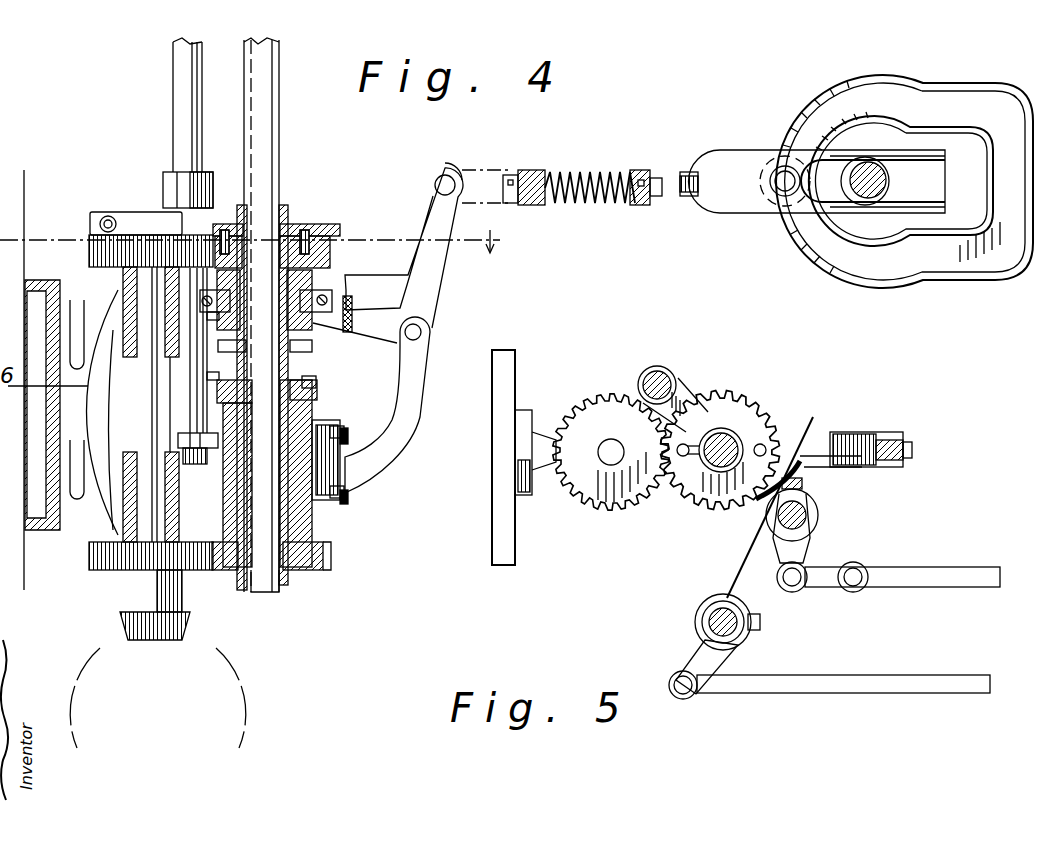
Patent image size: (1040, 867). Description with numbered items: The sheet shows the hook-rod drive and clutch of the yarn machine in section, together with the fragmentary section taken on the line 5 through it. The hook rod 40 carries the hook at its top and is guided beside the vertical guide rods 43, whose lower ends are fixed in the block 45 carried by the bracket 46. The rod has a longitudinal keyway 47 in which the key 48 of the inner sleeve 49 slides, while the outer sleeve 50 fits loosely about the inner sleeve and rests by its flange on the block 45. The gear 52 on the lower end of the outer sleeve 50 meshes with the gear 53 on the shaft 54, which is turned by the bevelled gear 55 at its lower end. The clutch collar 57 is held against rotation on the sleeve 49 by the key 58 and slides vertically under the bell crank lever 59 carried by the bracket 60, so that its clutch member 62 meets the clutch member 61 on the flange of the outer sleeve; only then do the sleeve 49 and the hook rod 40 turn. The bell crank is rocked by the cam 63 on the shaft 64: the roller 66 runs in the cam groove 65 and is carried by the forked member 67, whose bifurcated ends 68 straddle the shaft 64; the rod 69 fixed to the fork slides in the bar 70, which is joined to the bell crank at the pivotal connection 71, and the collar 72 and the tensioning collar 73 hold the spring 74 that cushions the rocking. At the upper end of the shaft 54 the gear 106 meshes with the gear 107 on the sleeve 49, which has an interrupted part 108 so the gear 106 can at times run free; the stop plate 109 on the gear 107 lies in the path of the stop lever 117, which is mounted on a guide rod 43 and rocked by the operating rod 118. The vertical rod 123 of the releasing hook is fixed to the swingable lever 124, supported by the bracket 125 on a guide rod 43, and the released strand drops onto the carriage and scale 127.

In FIG. 4, the keyway 47 is at (248, 48).
In FIG. 4, the guide rods 43 is at (181, 120).
In FIG. 5, the guide rods 43 is at (818, 517).
In FIG. 4, the hook rod 40 is at (262, 108).
In FIG. 4, the gear 106 is at (92, 252).
In FIG. 5, the gear 106 is at (598, 506).
In FIG. 4, the stop plate 109 is at (320, 230).
In FIG. 4, the gear 107 is at (330, 250).
In FIG. 5, the gear 107 is at (707, 490).
In FIG. 4, the clutch collar 57 is at (315, 277).
In FIG. 4, the key 58 is at (222, 318).
In FIG. 4, the clutch member 62 is at (315, 316).
In FIG. 4, the clutch member 61 is at (317, 382).
In FIG. 4, the bell crank lever 59 is at (435, 283).
In FIG. 5, the bell crank lever 59 is at (809, 477).
In FIG. 4, the bracket 60 is at (412, 432).
In FIG. 4, the block 45 is at (340, 506).
In FIG. 4, the gear 52 is at (335, 556).
In FIG. 4, the outer sleeve 50 is at (300, 572).
In FIG. 4, the inner sleeve 49 is at (292, 572).
In FIG. 4, the key 48 is at (262, 594).
In FIG. 4, the gear 53 is at (184, 578).
In FIG. 4, the bevelled gear 55 is at (120, 626).
In FIG. 4, the shaft 54 is at (120, 428).
In FIG. 4, the section line 5— 5 is at (255, 240).
In FIG. 4, the pivotal connection 71 is at (447, 180).
In FIG. 4, the bar 70 is at (488, 176).
In FIG. 5, the bar 70 is at (866, 468).
In FIG. 4, the collar 72 is at (515, 205).
In FIG. 4, the spring 74 is at (596, 205).
In FIG. 4, the collar 73 is at (645, 206).
In FIG. 4, the rod 69 is at (666, 170).
In FIG. 4, the forked member 67 is at (745, 212).
In FIG. 4, the roller 66 is at (778, 168).
In FIG. 4, the bifurcated ends 68 is at (928, 192).
In FIG. 4, the shaft 64 is at (888, 180).
In FIG. 4, the cam 63 is at (898, 283).
In FIG. 4, the cam groove 65 is at (992, 278).
In FIG. 5, the bracket 46 is at (545, 480).
In FIG. 5, the interrupted part 108 is at (673, 437).
In FIG. 5, the stop lever 117 is at (783, 498).
In FIG. 5, the bracket 125 is at (778, 586).
In FIG. 5, the operating rod 118 is at (908, 570).
In FIG. 5, the rod 123 is at (752, 636).
In FIG. 5, the lever 124 is at (700, 652).
In FIG. 5, the carriage and scale 127 is at (870, 695).